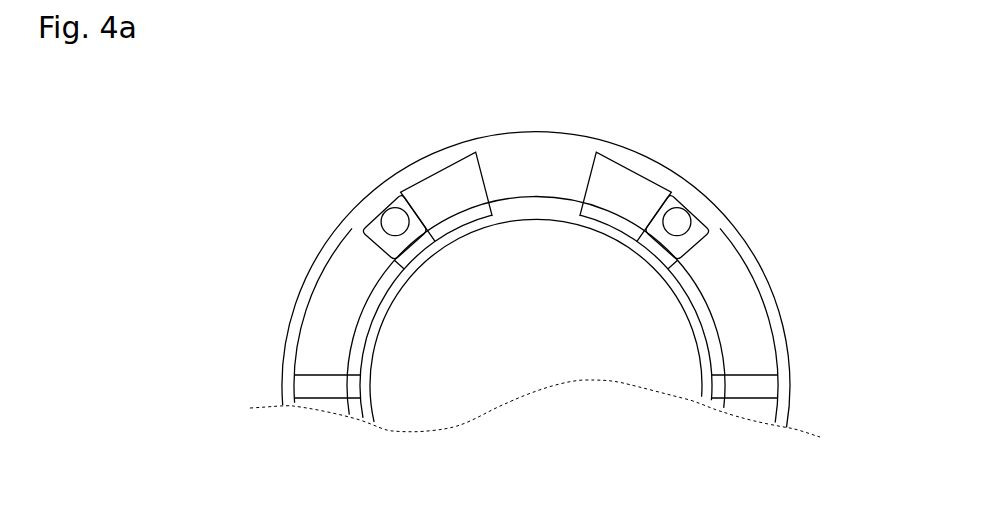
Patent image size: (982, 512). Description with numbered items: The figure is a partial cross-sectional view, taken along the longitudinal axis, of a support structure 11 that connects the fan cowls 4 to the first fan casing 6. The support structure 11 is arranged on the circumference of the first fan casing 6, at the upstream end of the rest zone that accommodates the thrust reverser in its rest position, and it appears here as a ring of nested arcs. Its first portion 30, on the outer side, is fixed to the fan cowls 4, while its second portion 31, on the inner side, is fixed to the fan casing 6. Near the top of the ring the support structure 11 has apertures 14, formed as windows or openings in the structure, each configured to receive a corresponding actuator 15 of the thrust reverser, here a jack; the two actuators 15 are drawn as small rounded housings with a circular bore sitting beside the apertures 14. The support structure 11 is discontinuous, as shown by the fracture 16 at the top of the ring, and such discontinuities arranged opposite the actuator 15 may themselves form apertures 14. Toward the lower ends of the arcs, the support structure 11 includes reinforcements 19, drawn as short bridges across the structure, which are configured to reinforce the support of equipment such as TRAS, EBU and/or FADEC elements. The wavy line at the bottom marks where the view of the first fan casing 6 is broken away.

The fan cowls 4 is at (451, 138).
The first fan casing 6 is at (397, 338).
The support structure 11 is at (290, 297).
The apertures 14 is at (418, 200).
The actuator 15 is at (395, 222).
The fracture 16 is at (549, 138).
The reinforcements 19 is at (313, 387).
The first portion 30 is at (290, 336).
The second portion 31 is at (403, 292).